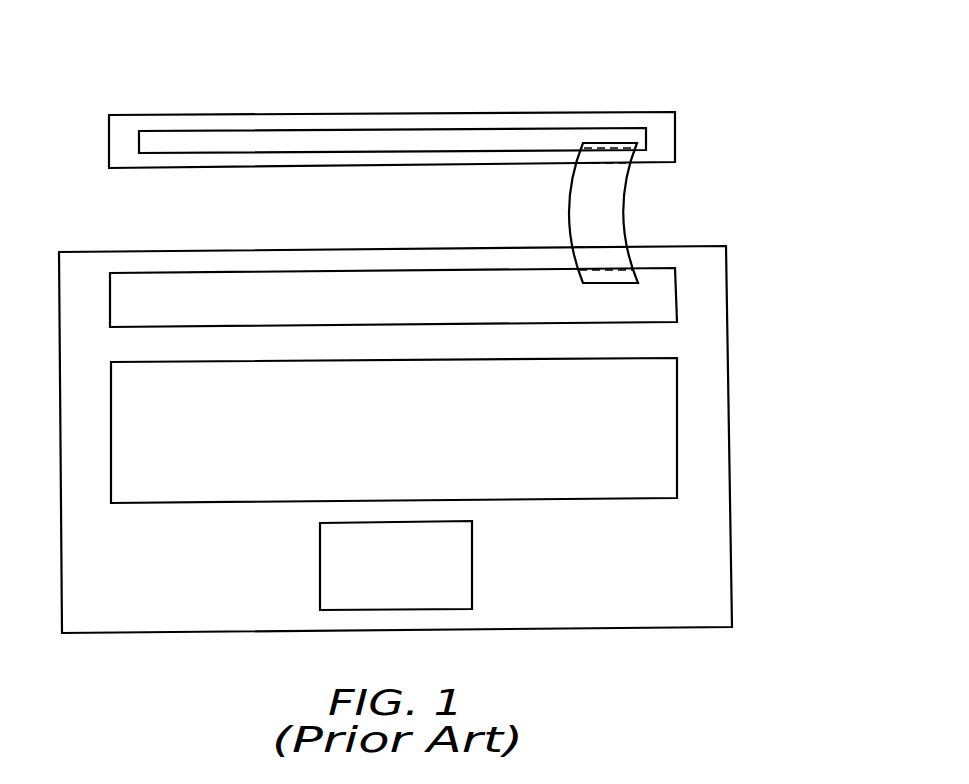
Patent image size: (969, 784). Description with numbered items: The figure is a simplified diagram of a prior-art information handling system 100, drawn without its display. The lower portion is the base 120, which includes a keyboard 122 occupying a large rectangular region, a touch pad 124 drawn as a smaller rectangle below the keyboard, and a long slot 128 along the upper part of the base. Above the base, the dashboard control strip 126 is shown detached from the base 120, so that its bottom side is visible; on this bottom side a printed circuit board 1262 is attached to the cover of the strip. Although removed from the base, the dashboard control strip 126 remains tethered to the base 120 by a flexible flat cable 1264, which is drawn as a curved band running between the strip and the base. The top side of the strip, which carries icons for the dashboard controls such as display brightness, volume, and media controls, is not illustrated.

The information handling system 100 is at (795, 113).
The base 120 is at (730, 435).
The keyboard 122 is at (648, 485).
The touch pad 124 is at (461, 597).
The dashboard control strip 126 is at (525, 113).
The slot 128 is at (593, 322).
The printed circuit board 1262 is at (350, 138).
The flexible flat cable 1264 is at (626, 207).